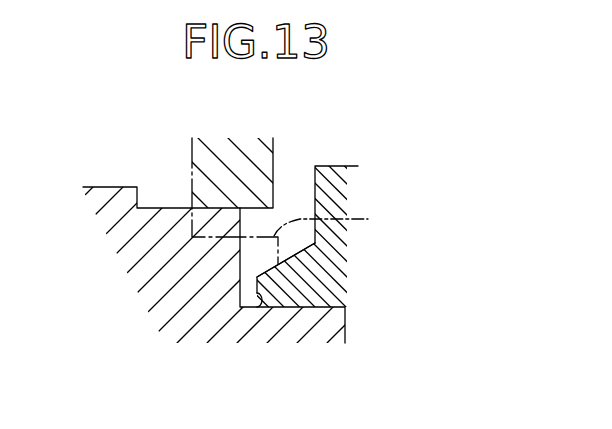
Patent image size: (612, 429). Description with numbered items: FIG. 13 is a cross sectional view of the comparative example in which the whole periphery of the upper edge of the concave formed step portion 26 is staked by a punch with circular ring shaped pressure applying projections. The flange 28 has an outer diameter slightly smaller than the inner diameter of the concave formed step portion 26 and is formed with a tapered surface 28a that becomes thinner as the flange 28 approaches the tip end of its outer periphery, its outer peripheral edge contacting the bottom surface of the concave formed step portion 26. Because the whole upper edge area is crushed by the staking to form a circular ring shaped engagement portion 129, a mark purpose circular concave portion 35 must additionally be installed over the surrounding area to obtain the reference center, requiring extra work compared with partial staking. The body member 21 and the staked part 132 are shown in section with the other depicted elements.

The housing member 21 is at (335, 193).
The concave formed step portion 26 is at (255, 297).
The flange 28 is at (278, 293).
The tapered surface 28a is at (267, 261).
The mark purpose circular concave portion 35 is at (148, 200).
The circular ring shaped engagement portion 129 is at (368, 219).
The inner member 132 is at (255, 162).